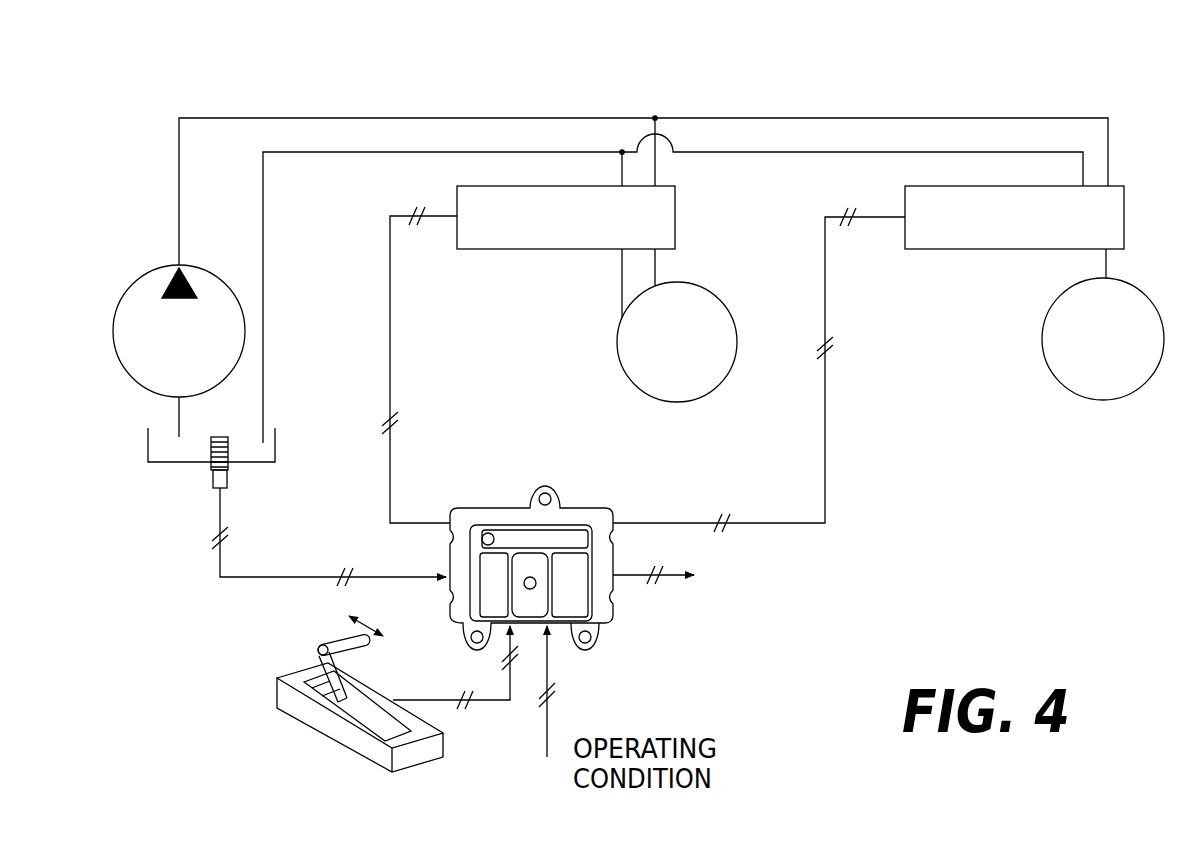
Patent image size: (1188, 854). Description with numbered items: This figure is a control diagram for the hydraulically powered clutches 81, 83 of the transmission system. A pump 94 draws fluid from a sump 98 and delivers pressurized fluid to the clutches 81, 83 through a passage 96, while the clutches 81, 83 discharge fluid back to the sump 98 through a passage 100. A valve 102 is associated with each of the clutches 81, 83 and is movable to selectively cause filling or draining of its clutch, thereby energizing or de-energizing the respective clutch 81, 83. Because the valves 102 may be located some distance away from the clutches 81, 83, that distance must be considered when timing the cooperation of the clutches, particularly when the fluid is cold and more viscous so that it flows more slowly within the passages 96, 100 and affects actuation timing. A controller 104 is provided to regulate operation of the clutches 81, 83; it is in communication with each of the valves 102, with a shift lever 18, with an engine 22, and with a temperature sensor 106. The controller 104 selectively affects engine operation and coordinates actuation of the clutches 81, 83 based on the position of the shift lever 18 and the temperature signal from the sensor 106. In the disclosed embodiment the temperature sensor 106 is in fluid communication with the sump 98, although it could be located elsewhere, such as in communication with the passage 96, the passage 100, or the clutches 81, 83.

The shift lever 18 is at (320, 650).
The engine 22 is at (678, 587).
The clutch 81 is at (692, 357).
The clutch 83 is at (1118, 354).
The pump 94 is at (194, 347).
The passage 96 is at (243, 118).
The sump 98 is at (140, 442).
The passage 100 is at (263, 352).
The valve 102 is at (585, 230).
The controller 104 is at (554, 540).
The temperature sensor 106 is at (228, 475).